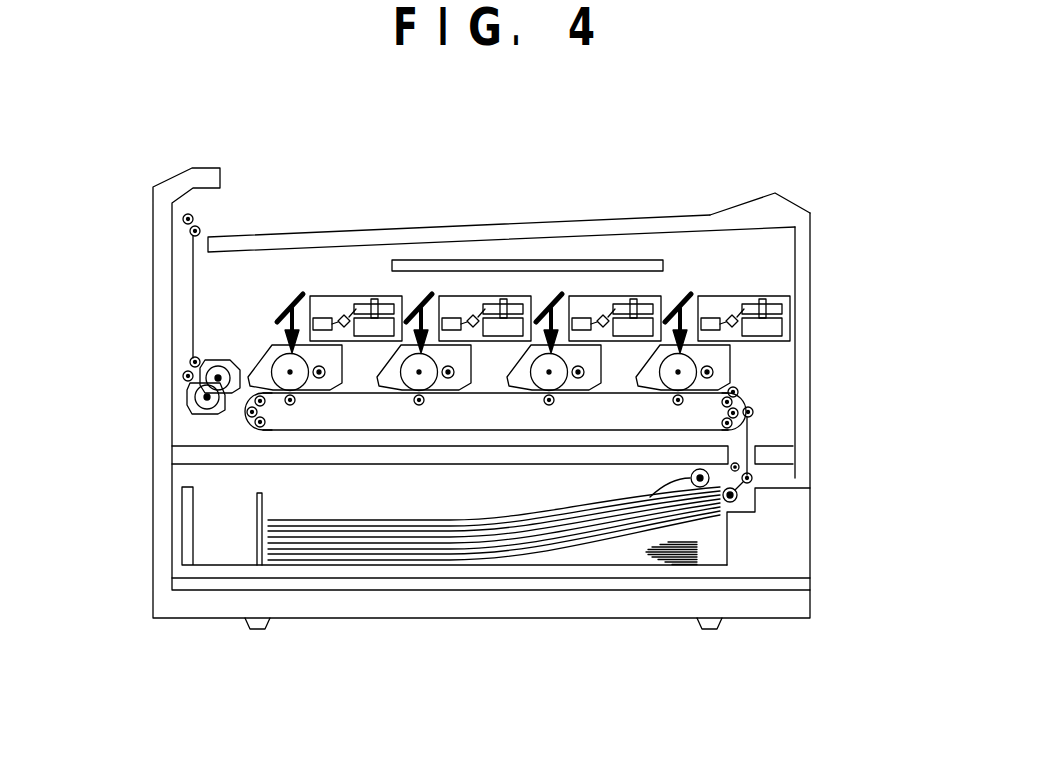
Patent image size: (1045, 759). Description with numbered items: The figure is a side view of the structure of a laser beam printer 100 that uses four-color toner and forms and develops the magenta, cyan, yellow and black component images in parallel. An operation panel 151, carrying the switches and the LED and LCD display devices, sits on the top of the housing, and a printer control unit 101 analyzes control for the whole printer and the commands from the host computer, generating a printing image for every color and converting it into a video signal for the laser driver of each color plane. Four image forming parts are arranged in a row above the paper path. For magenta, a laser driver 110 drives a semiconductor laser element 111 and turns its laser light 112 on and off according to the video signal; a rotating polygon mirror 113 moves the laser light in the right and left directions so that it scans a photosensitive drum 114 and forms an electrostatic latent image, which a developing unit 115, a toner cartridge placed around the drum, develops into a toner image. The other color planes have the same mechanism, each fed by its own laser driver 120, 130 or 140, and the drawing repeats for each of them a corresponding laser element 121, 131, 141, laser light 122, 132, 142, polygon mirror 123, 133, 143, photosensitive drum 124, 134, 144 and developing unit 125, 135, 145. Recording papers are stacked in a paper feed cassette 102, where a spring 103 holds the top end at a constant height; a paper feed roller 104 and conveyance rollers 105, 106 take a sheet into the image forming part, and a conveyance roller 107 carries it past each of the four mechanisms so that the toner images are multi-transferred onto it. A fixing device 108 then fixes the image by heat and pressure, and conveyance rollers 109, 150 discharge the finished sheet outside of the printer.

The printer 100 is at (810, 336).
The printer control unit 101 is at (430, 261).
The paper feed cassette 102 is at (797, 552).
The spring 103 is at (690, 555).
The paper feed roller 104 is at (658, 495).
The conveyance roller 105 is at (770, 490).
The conveyance roller 106 is at (753, 414).
The conveyance roller 107 is at (468, 393).
The fixing device 108 is at (187, 407).
The conveyance roller 109 is at (183, 374).
The laser driver 110 is at (711, 318).
The semiconductor laser element 111 is at (735, 343).
The laser light 112 is at (735, 313).
The rotating polygon mirror 113 is at (757, 294).
The photosensitive drum 114 is at (674, 405).
The developing unit 115 is at (733, 364).
The laser driver 120 is at (580, 318).
The photosensitive drum 121 is at (562, 386).
The reflecting mirror 122 is at (603, 316).
The scanning optical unit 123 is at (618, 301).
The transfer roller 124 is at (545, 403).
The developing unit 125 is at (577, 394).
The laser driver 130 is at (452, 319).
The photosensitive drum 131 is at (432, 386).
The reflecting mirror 132 is at (473, 316).
The scanning optical unit 133 is at (484, 305).
The transfer roller 134 is at (414, 402).
The developing unit 135 is at (449, 392).
The laser driver 140 is at (292, 307).
The photosensitive drum 141 is at (303, 386).
The scanning optical unit 142 is at (360, 306).
The reflecting mirror 143 is at (337, 322).
The transfer roller 144 is at (285, 398).
The developing unit 145 is at (317, 394).
The conveyance roller 150 is at (207, 229).
The operation panel 151 is at (778, 197).